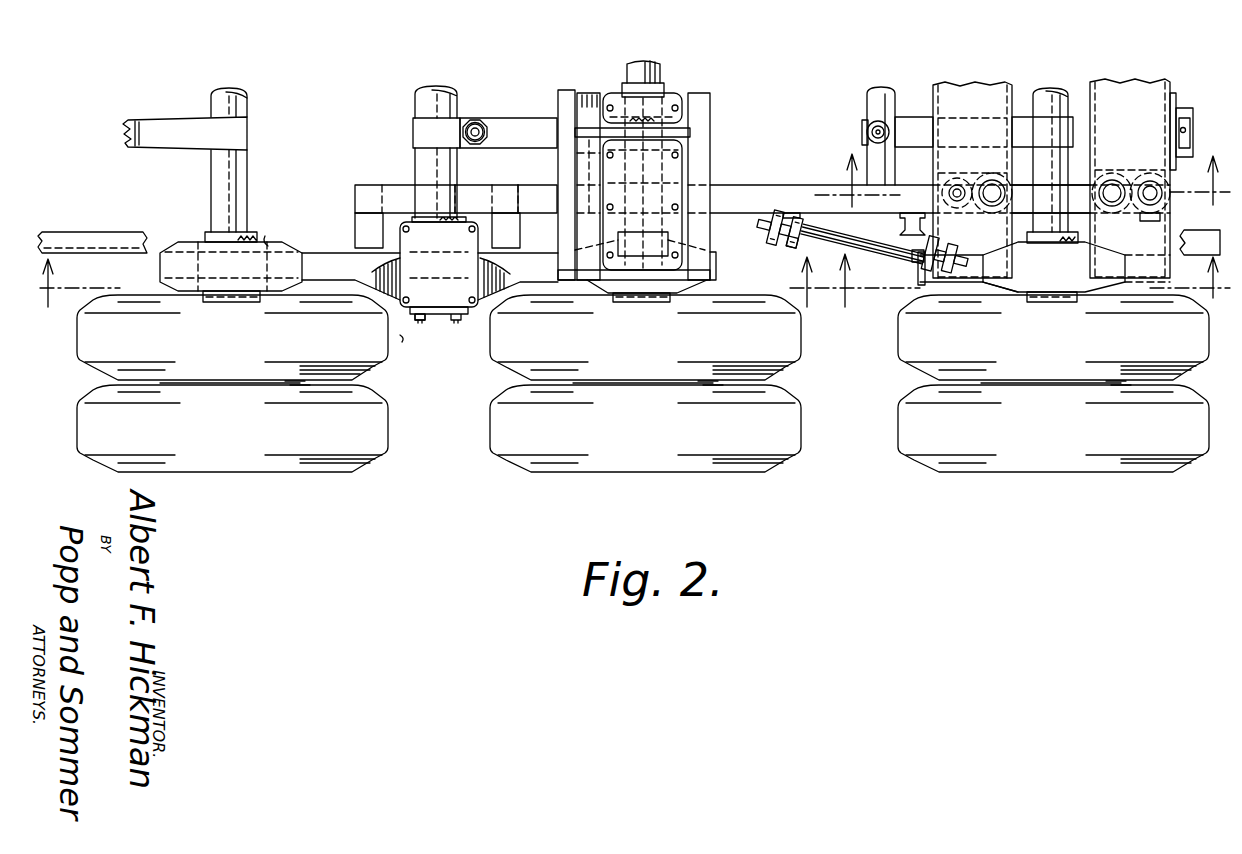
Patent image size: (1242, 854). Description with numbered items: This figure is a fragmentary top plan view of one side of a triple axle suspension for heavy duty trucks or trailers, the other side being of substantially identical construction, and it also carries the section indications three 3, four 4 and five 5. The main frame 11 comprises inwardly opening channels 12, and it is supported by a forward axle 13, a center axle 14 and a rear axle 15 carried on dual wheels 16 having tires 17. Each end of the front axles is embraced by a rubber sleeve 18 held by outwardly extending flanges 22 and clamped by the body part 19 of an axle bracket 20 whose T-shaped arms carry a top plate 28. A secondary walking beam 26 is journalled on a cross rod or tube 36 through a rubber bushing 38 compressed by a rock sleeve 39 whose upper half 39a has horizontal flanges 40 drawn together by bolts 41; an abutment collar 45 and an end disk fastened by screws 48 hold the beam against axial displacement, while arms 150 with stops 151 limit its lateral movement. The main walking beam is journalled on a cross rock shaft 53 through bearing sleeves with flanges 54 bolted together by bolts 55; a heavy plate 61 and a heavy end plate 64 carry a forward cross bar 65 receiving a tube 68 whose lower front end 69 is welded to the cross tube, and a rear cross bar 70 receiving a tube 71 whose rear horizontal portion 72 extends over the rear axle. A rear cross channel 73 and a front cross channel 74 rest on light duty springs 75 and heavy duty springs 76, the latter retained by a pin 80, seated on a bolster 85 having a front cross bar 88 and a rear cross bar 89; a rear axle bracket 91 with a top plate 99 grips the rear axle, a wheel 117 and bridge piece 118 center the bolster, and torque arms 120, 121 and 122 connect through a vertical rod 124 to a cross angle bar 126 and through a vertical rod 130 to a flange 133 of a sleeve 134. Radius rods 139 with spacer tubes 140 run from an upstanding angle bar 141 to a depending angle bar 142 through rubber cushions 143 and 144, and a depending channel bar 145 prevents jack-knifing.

The section line 3- 3 is at (474, 287).
The section line 4- 4 is at (1035, 288).
The section line 5- 5 is at (1022, 170).
The main frame 11 is at (64, 224).
The inwardly opening channel 12 is at (138, 230).
The forward axle 13 is at (219, 92).
The center axle 14 is at (642, 60).
The rear axle 15 is at (1054, 88).
The dual wheels 16 is at (78, 387).
The tires 17 is at (208, 396).
The rubber sleeve 18 is at (266, 236).
The body part 19 is at (286, 237).
The axle bracket 20 is at (187, 230).
The outwardly extending flanges 22 is at (217, 232).
The secondary walking beam 26 is at (325, 291).
The top plate 28 is at (216, 302).
The cross rod or tube 36 is at (420, 92).
The rubber bushing 38 is at (470, 316).
The rock sleeve 39 is at (490, 258).
The upper half of rock sleeve 39a is at (420, 322).
The horizontal flanges 40 is at (398, 268).
The bolts 41 is at (420, 300).
The abutment collar 45 is at (440, 222).
The screws 48 is at (398, 338).
The cross rock shaft 53 is at (665, 92).
The flanges 54 is at (598, 92).
The bolts 55 is at (673, 208).
The heavy plate or block 61 is at (690, 132).
The heavy end plate or block 64 is at (652, 300).
The cross bar 65 is at (565, 92).
The tube 68 is at (540, 192).
The lower front end 69 is at (464, 192).
The cross bar 70 is at (706, 146).
The tube 71 is at (798, 186).
The rear horizontal portion 72 is at (1056, 196).
The rear cross channel 73 is at (1138, 82).
The front cross channel 74 is at (970, 86).
The light duty spring 75 is at (994, 184).
The heavy duty spring 76 is at (957, 185).
The pin 80 is at (928, 220).
The bolster 85 is at (1008, 48).
The front cross bar 88 is at (973, 280).
The rear cross bar 89 is at (1048, 243).
The axle bracket 91 is at (1007, 298).
The top plate 99 is at (1048, 300).
The wheel 117 is at (1190, 130).
The bridge piece 118 is at (1182, 108).
The torque arm 120 is at (912, 120).
The torque arm 121 is at (545, 120).
The torque arm 122 is at (168, 120).
The vertical rod 124 is at (870, 126).
The cross angle bar 126 is at (880, 88).
The vertical rod 130 is at (476, 118).
The flange 133 is at (488, 132).
The sleeve 134 is at (410, 118).
The radius rod 139 is at (764, 230).
The spacer tube 140 is at (858, 242).
The upstanding angle bar 141 is at (926, 285).
The depending angle bar 142 is at (774, 248).
The rubber cushions 143 is at (935, 244).
The rubber cushions 144 is at (796, 204).
The depending channel bar 145 is at (912, 258).
The arms 150 is at (374, 192).
The stop 151 is at (358, 231).